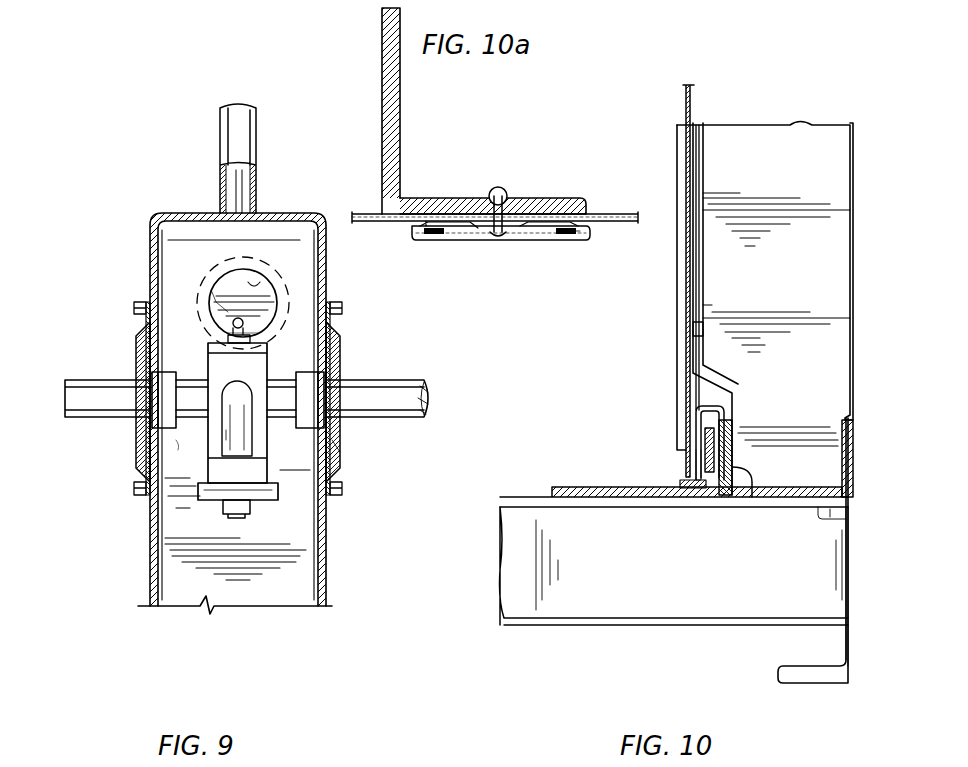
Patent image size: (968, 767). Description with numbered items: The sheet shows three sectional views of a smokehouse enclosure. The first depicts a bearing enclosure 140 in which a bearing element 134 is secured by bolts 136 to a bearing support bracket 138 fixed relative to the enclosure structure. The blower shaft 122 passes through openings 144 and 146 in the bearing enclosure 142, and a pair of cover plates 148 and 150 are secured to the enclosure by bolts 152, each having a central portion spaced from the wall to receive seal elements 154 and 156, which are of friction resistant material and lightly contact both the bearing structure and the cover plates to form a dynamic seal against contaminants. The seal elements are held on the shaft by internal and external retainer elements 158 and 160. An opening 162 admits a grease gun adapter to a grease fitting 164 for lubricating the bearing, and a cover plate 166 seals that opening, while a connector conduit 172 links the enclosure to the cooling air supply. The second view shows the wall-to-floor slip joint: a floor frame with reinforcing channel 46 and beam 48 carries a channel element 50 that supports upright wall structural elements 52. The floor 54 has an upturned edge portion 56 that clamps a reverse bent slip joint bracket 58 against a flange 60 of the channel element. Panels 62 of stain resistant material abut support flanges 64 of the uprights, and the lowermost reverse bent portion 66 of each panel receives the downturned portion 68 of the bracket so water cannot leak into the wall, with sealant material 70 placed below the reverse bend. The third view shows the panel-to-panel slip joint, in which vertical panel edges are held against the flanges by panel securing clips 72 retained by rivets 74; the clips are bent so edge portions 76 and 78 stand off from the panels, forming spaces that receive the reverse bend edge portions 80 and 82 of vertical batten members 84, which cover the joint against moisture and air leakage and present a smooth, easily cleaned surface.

In FIG. 10, the reinforcing channel 46 is at (850, 654).
In FIG. 10, the reinforcing beam 48 is at (556, 628).
In FIG. 10, the channel element 50 is at (855, 452).
In FIG. 10a, the upright wall structural element 52 is at (402, 110).
In FIG. 10, the upright wall structural element 52 is at (838, 265).
In FIG. 10, the floor 54 is at (588, 500).
In FIG. 10, the upturned edge portion 56 is at (714, 462).
In FIG. 10, the reverse bent slip joint bracket 58 is at (718, 407).
In FIG. 10, the flange 60 is at (728, 438).
In FIG. 10a, the panel 62 is at (364, 214).
In FIG. 10, the panel 62 is at (694, 98).
In FIG. 10a, the support flange 64 is at (562, 200).
In FIG. 10, the support flange 64 is at (703, 178).
In FIG. 10, the reverse bent portion 66 is at (745, 498).
In FIG. 10, the downturned portion 68 is at (696, 460).
In FIG. 10, the sealant material 70 is at (700, 490).
In FIG. 10a, the panel securing clip 72 is at (490, 240).
In FIG. 10a, the rivet 74 is at (504, 192).
In FIG. 10a, the edge portion 76 is at (432, 240).
In FIG. 10a, the edge portion 78 is at (580, 238).
In FIG. 10a, the reverse bend edge portion 80 is at (438, 222).
In FIG. 10a, the reverse bend edge portion 82 is at (588, 216).
In FIG. 10a, the vertical batten member 84 is at (556, 240).
In FIG. 9, the blower shaft 122 is at (418, 418).
In FIG. 9, the bearing element 134 is at (268, 352).
In FIG. 9, the bolt 136 is at (276, 448).
In FIG. 9, the bearing support bracket 138 is at (208, 472).
In FIG. 9, the bearing enclosure 140 is at (342, 548).
In FIG. 9, the bearing enclosure 142 is at (150, 228).
In FIG. 9, the opening 144 is at (148, 348).
In FIG. 9, the opening 146 is at (316, 386).
In FIG. 9, the cover plate 148 is at (140, 338).
In FIG. 9, the cover plate 150 is at (342, 350).
In FIG. 9, the bolt 152 is at (140, 496).
In FIG. 9, the seal element 154 is at (146, 448).
In FIG. 9, the seal element 156 is at (336, 444).
In FIG. 9, the internal retainer element 158 is at (178, 432).
In FIG. 9, the external retainer element 160 is at (163, 382).
In FIG. 9, the opening 162 is at (268, 285).
In FIG. 9, the grease fitting 164 is at (256, 312).
In FIG. 9, the cover plate 166 is at (222, 294).
In FIG. 9, the connector conduit 172 is at (260, 115).